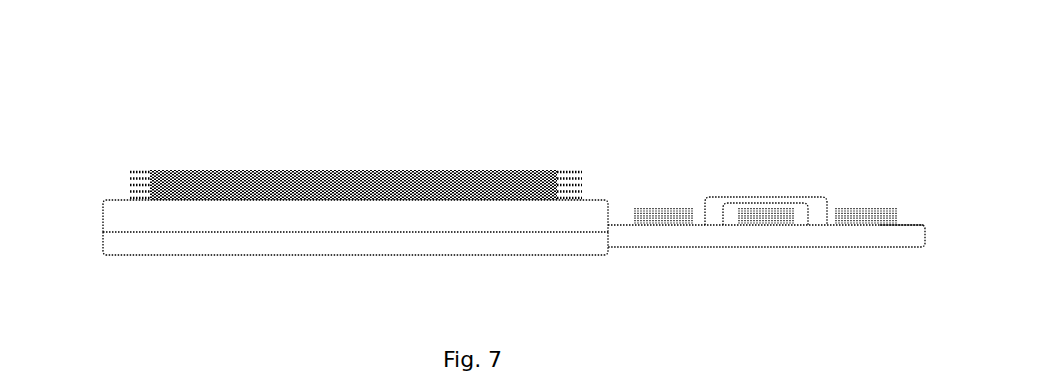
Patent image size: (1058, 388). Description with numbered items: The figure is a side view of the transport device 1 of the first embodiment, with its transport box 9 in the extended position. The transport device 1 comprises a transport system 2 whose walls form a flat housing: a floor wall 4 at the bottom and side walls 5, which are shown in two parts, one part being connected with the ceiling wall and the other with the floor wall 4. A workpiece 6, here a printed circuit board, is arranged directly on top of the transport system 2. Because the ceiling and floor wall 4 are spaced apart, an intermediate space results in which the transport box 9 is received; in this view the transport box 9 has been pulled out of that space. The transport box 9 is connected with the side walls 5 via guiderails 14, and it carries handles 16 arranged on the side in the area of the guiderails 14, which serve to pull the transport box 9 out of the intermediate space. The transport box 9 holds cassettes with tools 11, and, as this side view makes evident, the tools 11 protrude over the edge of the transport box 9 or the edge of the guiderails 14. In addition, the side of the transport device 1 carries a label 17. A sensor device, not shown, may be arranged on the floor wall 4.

The transport device 1 is at (276, 73).
The transport system 2 is at (187, 128).
The floor wall 4 is at (312, 264).
The side walls 5 is at (424, 238).
The workpiece 6 is at (424, 170).
The transport box 9 is at (914, 221).
The tools 11 is at (648, 207).
The guiderails 14 is at (775, 240).
The handle 16 is at (722, 200).
The label 17 is at (127, 217).